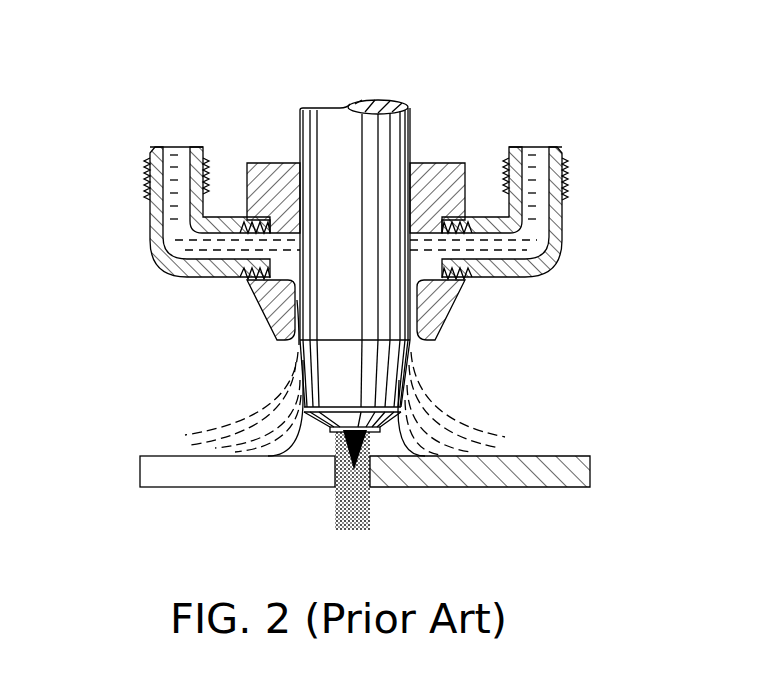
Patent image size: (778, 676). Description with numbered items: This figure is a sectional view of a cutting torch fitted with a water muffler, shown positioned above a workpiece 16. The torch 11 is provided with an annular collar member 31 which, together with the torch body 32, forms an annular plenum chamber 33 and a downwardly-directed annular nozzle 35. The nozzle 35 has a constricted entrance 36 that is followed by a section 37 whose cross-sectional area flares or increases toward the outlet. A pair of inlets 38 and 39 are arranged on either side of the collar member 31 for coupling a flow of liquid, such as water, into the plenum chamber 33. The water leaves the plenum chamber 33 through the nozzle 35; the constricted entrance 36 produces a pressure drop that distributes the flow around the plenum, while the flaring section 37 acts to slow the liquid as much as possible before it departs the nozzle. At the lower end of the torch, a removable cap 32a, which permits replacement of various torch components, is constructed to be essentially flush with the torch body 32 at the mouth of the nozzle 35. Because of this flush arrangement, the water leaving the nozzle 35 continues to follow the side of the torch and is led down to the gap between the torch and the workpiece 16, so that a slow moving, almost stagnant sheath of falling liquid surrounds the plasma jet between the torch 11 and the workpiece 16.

The torch 11 is at (373, 244).
The workpiece plate 16 is at (538, 458).
The annular collar member 31 is at (263, 173).
The torch body 32 is at (410, 128).
The removable cap 32a is at (403, 387).
The annular plenum chamber 33 is at (287, 258).
The annular nozzle 35 is at (268, 327).
The constricted entrance 36 is at (433, 300).
The flaring section 37 is at (293, 366).
The inlet 38 is at (150, 215).
The inlet 39 is at (560, 215).